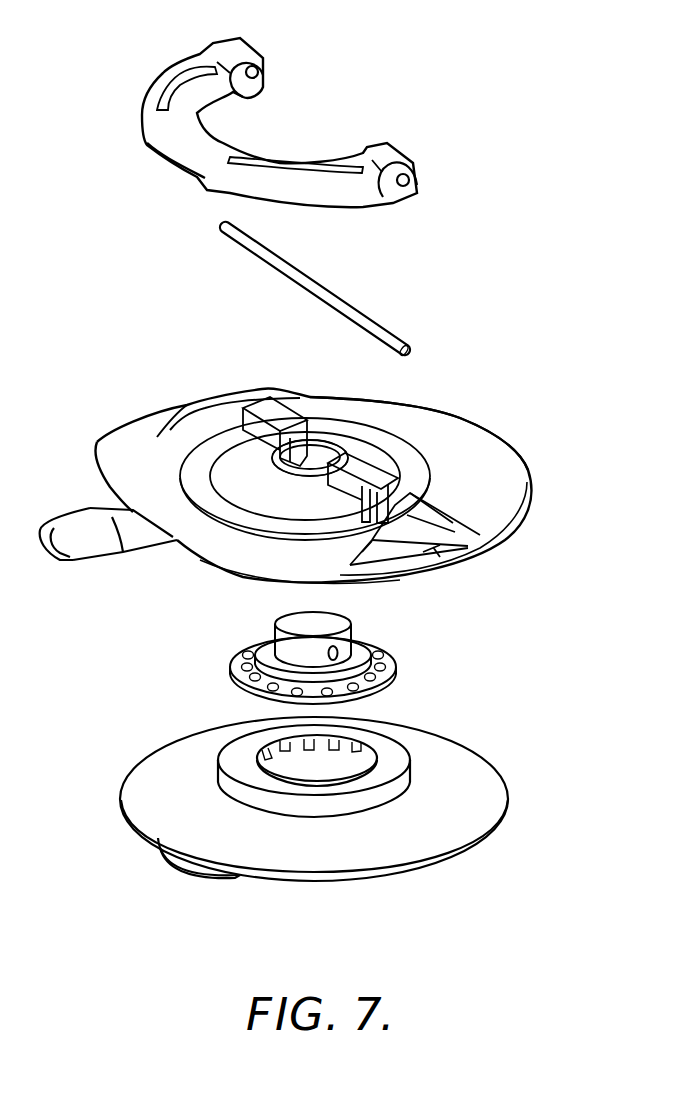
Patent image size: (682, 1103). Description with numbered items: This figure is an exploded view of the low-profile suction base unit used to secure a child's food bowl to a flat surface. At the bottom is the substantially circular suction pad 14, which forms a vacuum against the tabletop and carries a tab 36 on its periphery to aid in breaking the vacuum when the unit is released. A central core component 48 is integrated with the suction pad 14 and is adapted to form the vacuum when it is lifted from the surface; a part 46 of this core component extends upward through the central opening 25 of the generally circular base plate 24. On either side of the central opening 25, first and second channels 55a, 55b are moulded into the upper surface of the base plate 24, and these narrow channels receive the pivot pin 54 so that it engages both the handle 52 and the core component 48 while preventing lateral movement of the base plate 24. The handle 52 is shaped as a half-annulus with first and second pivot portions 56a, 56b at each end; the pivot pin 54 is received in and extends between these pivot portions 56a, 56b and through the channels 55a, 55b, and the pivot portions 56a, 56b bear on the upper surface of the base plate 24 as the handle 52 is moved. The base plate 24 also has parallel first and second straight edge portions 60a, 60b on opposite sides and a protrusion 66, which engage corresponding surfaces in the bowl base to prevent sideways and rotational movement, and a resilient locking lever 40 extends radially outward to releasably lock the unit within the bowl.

The suction pad 14 is at (482, 773).
The base plate 24 is at (515, 472).
The central opening 25 is at (312, 453).
The tab 36 is at (167, 870).
The locking lever 40 is at (88, 545).
The part of the central core component 46 is at (355, 635).
The central core component 48 is at (250, 667).
The handle 52 is at (145, 95).
The pivot pin 54 is at (326, 290).
The first channel 55a is at (272, 418).
The second channel 55b is at (370, 462).
The first pivot portion 56a is at (266, 60).
The second pivot portion 56b is at (420, 163).
The first straight edge portion 60a is at (433, 552).
The second straight edge portion 60b is at (187, 407).
The protrusion 66 is at (513, 437).